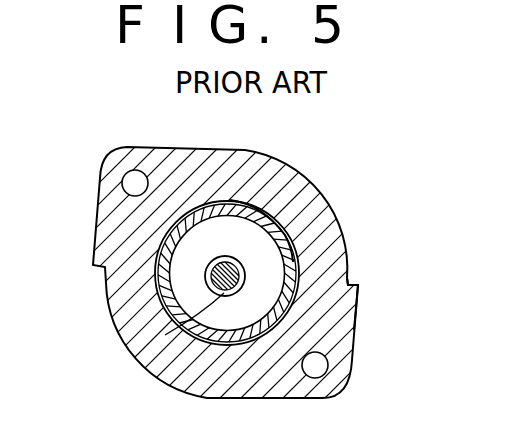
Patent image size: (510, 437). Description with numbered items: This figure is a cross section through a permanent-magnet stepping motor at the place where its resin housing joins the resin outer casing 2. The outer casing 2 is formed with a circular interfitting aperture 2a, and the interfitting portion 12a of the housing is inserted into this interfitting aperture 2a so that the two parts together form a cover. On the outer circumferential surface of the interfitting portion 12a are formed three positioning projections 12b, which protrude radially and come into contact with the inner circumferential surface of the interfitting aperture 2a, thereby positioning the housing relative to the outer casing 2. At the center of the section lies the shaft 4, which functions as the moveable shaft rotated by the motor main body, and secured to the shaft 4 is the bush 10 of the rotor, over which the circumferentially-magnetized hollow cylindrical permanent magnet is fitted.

The outer casing 2 is at (323, 239).
The interfitting aperture 2a is at (300, 302).
The shaft 4 is at (165, 335).
The bush 10 is at (213, 292).
The interfitting portion 12a is at (268, 218).
The positioning projections 12b is at (252, 183).